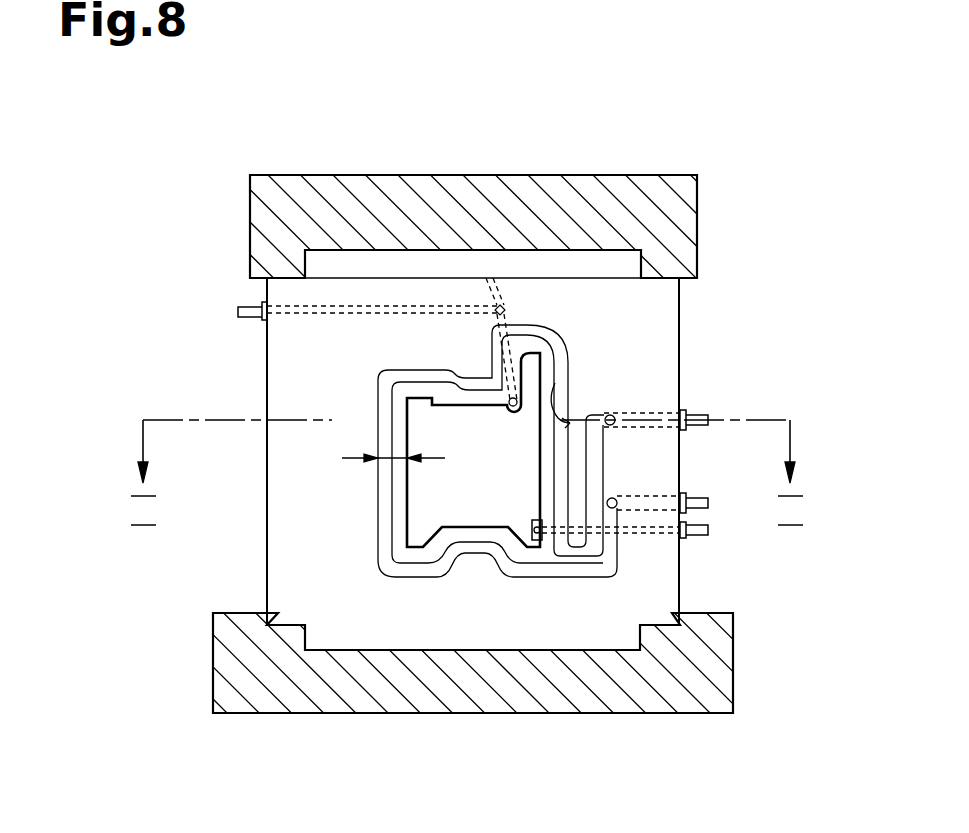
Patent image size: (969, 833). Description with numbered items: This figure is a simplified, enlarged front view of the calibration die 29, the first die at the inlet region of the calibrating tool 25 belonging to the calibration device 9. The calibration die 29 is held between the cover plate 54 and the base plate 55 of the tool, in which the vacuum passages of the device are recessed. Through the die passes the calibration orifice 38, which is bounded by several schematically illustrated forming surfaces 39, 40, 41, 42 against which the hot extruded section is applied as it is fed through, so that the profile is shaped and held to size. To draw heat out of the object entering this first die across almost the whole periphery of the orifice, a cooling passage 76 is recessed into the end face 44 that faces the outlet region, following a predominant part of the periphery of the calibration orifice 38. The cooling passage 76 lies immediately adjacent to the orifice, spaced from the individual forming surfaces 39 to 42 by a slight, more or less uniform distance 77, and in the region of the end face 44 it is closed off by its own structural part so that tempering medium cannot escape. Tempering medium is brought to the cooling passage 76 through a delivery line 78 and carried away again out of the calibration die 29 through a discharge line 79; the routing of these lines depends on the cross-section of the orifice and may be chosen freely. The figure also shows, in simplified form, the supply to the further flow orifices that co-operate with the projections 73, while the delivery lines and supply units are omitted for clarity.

The calibration device 9 is at (663, 143).
The calibrating tool 25 is at (715, 157).
The calibration die 29 is at (328, 292).
The calibration orifice 38 is at (523, 438).
The forming surface 39 is at (532, 483).
The forming surface 40 is at (466, 403).
The forming surface 41 is at (410, 492).
The forming surface 42 is at (462, 518).
The end face 44 is at (650, 580).
The cover plate 54 is at (663, 227).
The base plate 55 is at (695, 685).
The projection 73 is at (523, 522).
The cooling passage 76 is at (555, 383).
The distance 77 is at (360, 446).
The delivery line 78 is at (700, 415).
The discharge line 79 is at (697, 503).